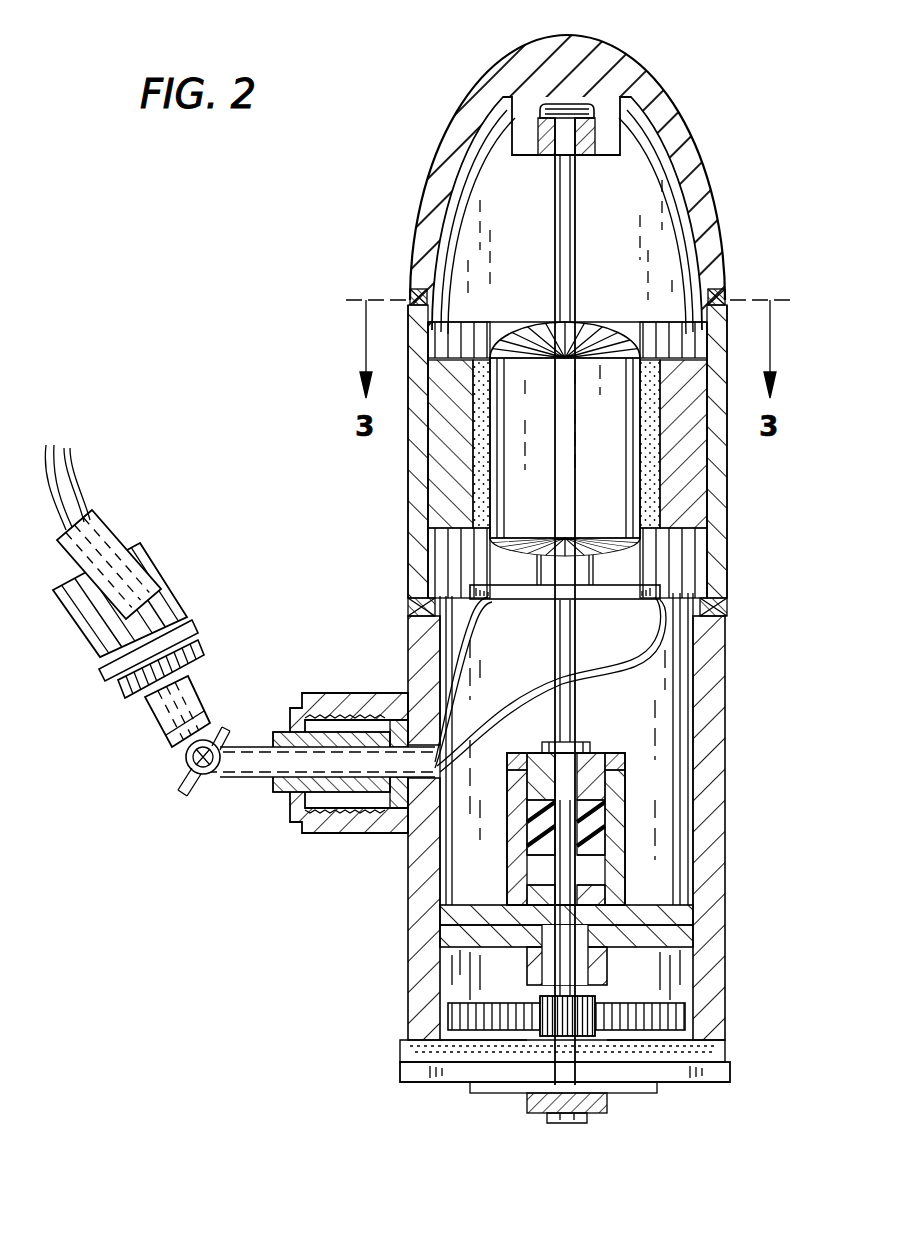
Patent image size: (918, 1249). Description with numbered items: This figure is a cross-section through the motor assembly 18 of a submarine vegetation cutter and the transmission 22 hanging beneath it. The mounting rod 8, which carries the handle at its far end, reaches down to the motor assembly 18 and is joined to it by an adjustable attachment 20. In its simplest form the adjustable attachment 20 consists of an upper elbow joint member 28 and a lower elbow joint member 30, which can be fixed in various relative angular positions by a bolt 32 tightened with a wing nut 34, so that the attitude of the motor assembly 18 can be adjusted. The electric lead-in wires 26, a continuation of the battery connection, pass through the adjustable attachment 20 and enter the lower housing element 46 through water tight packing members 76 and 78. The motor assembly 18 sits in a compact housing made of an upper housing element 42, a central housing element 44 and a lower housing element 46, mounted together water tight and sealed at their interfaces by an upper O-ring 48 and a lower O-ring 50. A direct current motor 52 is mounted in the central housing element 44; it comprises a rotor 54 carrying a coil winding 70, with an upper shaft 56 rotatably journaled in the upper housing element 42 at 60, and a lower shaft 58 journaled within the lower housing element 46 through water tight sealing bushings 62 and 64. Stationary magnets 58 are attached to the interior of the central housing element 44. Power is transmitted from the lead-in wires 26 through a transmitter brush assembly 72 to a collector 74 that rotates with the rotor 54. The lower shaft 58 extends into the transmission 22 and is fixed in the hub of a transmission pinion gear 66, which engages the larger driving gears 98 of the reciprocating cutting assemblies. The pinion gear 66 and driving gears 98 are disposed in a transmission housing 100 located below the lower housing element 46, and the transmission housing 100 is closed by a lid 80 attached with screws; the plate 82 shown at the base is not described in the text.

The mounting rod 8 is at (96, 522).
The motor assembly 18 is at (738, 604).
The adjustable attachment 20 is at (212, 812).
The transmission 22 is at (410, 1098).
The electric lead-in wires 26 is at (652, 692).
The upper elbow joint member 28 is at (192, 682).
The lower elbow joint member 30 is at (243, 745).
The bolt 32 is at (188, 758).
The wing nut 34 is at (184, 790).
The upper housing element 42 is at (665, 100).
The central housing element 44 is at (408, 482).
The lower housing element 46 is at (408, 871).
The upper O-ring 48 is at (412, 295).
The lower O-ring 50 is at (410, 605).
The direct current motor 52 is at (400, 455).
The rotor 54 is at (556, 454).
The upper shaft 56 is at (576, 249).
The lower shaft 58 is at (445, 388).
The journal 60 is at (577, 102).
The water tight sealing bushing 62 is at (630, 752).
The water tight sealing bushing 64 is at (510, 792).
The transmission pinion gear 66 is at (598, 1040).
The coil winding 70 is at (590, 336).
The transmitter brush assembly 72 is at (611, 592).
The collector 74 is at (538, 575).
The water tight packing member 76 is at (402, 758).
The water tight packing member 78 is at (410, 735).
The lid 80 is at (685, 1082).
The mounting plate 82 is at (728, 1050).
The driving gear 98 is at (690, 1010).
The transmission housing 100 is at (716, 960).